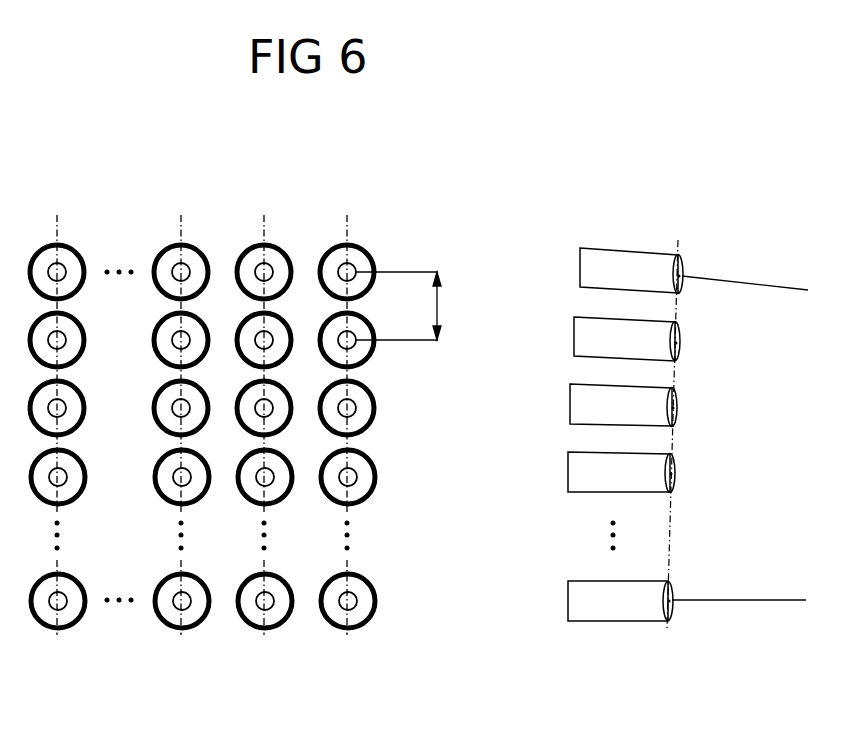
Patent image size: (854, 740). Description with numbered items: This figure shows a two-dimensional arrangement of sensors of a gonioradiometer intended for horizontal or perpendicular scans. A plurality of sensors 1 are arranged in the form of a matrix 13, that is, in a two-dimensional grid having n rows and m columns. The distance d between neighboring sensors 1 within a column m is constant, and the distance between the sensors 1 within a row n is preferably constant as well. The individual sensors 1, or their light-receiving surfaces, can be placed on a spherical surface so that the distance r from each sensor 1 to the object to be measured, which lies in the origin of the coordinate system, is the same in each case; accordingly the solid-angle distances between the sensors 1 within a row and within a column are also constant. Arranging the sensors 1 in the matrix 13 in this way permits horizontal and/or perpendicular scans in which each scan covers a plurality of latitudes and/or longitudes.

The matrix 13 is at (174, 191).
The sensor 1 is at (265, 628).
The rows n is at (119, 242).
The columns m is at (380, 536).
The distance d is at (407, 306).
The distance from the object to be measured r is at (751, 444).